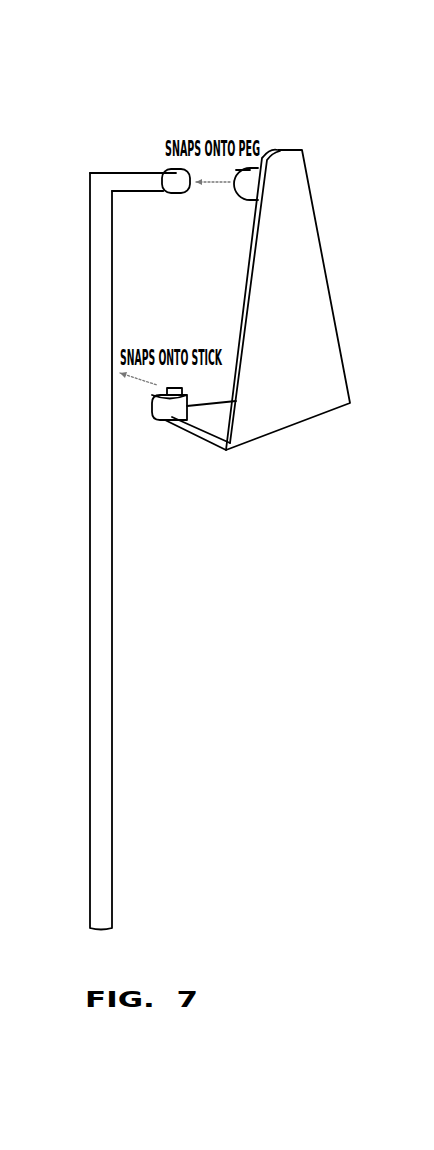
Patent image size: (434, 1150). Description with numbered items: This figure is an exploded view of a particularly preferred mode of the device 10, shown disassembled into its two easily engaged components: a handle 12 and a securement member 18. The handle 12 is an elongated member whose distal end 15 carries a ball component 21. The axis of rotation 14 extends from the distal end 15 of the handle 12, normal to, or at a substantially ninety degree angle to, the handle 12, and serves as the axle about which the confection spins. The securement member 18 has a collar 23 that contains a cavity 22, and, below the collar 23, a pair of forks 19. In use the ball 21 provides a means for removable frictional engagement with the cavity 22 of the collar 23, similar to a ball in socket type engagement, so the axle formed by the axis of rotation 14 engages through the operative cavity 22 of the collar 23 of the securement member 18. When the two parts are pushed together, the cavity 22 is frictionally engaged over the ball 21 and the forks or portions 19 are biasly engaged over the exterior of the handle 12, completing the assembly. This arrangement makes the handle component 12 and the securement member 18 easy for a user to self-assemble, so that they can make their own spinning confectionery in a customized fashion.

The device 10 is at (228, 88).
The handle 12 is at (112, 530).
The axis of rotation 14 is at (122, 172).
The distal end 15 is at (170, 193).
The securement member 18 is at (281, 165).
The forks 19 is at (164, 418).
The ball component 21 is at (163, 172).
The cavity 22 is at (236, 170).
The collar 23 is at (250, 187).